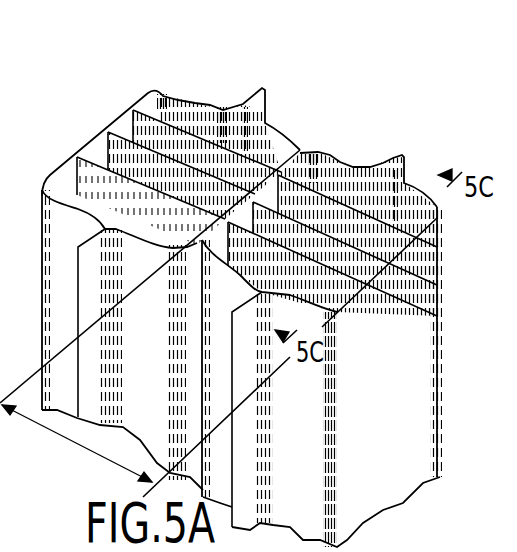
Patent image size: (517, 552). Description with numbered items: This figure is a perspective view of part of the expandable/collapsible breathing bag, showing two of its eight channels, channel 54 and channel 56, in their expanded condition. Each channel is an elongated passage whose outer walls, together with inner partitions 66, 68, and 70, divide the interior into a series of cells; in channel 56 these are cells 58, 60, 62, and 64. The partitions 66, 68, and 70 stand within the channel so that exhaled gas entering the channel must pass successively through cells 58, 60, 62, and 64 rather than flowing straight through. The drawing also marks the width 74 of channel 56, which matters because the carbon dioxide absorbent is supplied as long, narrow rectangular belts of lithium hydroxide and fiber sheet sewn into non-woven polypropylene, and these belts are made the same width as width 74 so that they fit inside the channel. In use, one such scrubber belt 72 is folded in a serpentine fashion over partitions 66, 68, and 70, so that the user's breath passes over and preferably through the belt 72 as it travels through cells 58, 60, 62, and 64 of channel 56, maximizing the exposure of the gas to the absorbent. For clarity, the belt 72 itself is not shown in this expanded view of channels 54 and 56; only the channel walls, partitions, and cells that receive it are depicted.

The channel 54 is at (200, 100).
The channel 56 is at (335, 165).
The cell 58 is at (412, 212).
The cell 60 is at (363, 273).
The cell 62 is at (345, 295).
The cell 64 is at (385, 300).
The inner partition 66 is at (325, 230).
The inner partition 68 is at (324, 233).
The inner partition 70 is at (312, 268).
The CO2 scrubber belt 72 is at (506, 543).
The width of channel 74 is at (77, 443).